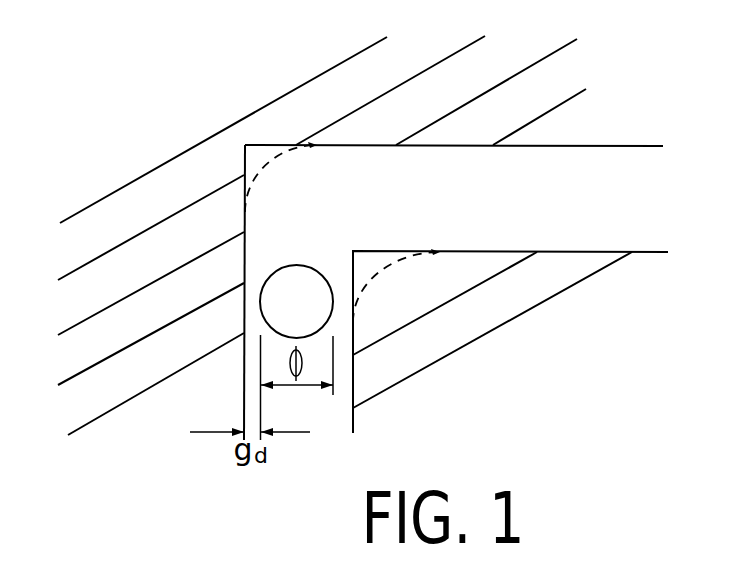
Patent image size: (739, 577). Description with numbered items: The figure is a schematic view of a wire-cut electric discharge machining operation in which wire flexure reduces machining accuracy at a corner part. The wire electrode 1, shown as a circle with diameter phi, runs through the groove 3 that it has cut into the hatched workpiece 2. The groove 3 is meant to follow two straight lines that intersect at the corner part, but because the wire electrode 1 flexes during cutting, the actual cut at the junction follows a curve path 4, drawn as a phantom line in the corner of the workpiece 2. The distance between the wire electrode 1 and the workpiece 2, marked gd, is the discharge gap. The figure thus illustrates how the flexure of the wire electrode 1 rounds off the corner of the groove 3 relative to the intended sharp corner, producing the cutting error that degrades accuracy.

The wire electrode 1 is at (333, 304).
The workpiece 2 is at (178, 235).
The groove 3 is at (367, 172).
The curve path 4 is at (283, 167).